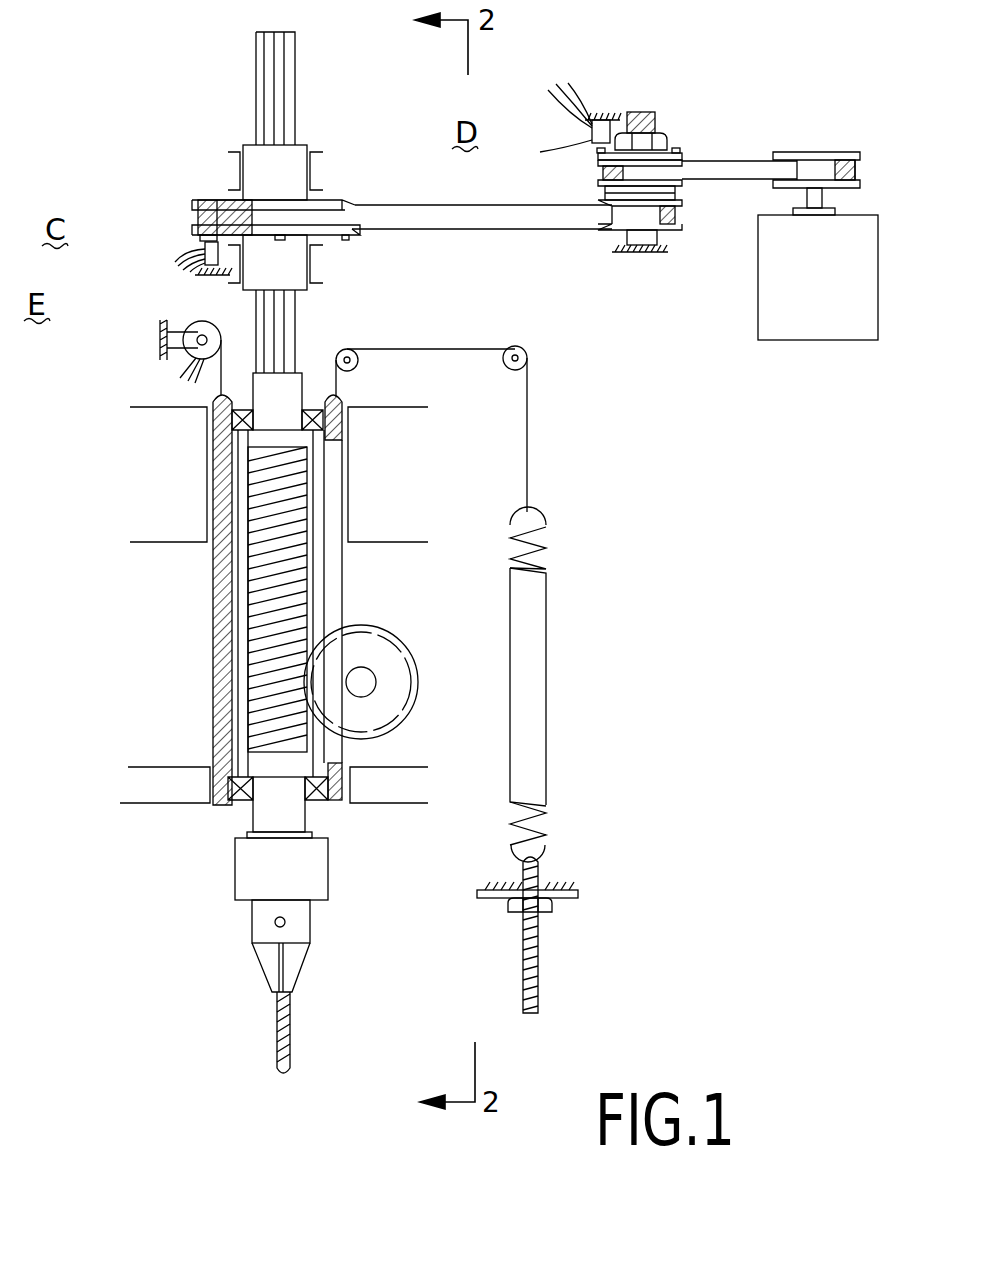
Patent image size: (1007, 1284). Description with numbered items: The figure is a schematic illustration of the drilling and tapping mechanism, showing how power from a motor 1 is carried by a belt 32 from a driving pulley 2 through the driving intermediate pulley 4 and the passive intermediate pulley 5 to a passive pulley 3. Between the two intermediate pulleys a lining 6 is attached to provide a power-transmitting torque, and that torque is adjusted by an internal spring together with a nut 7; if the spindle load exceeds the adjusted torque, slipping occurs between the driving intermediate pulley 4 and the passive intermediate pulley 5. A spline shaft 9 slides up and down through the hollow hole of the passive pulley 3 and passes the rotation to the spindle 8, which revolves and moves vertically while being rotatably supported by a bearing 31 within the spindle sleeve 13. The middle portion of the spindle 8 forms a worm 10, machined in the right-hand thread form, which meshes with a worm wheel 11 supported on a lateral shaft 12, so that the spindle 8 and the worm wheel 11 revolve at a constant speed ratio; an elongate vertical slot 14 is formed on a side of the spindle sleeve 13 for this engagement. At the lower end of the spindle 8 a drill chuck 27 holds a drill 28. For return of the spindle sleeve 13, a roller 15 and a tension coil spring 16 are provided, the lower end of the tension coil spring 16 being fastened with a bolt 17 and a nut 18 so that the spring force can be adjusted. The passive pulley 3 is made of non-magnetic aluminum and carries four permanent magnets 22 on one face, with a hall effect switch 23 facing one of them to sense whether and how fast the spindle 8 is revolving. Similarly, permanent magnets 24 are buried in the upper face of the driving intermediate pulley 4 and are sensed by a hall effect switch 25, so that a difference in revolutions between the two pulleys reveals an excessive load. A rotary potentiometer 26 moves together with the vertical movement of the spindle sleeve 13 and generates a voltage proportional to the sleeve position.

The motor 1 is at (848, 330).
The driving pulley 2 is at (828, 160).
The passive pulley 3 is at (340, 200).
The driving intermediate pulley 4 is at (598, 185).
The passive intermediate pulley 5 is at (598, 228).
The lining 6 is at (675, 192).
The nut 7 is at (668, 133).
The spindle 8 is at (295, 393).
The spline shaft 9 is at (290, 305).
The worm 10 is at (268, 640).
The worm wheel 11 is at (400, 642).
The lateral shaft 12 is at (365, 686).
The spindle sleeve 13 is at (215, 590).
The elongate vertical slot 14 is at (330, 576).
The roller 15 is at (360, 364).
The tension coil spring 16 is at (547, 610).
The bolt 17 is at (538, 945).
The nut 18 is at (552, 905).
The permanent magnets 22 is at (196, 237).
The hall effect switch 23 is at (200, 250).
The permanent magnets 24 is at (676, 150).
The hall effect switch 25 is at (592, 135).
The rotary potentiometer 26 is at (200, 322).
The drill chuck 27 is at (250, 873).
The drill 28 is at (283, 1035).
The bearing 31 is at (235, 418).
The belt 32 is at (742, 170).